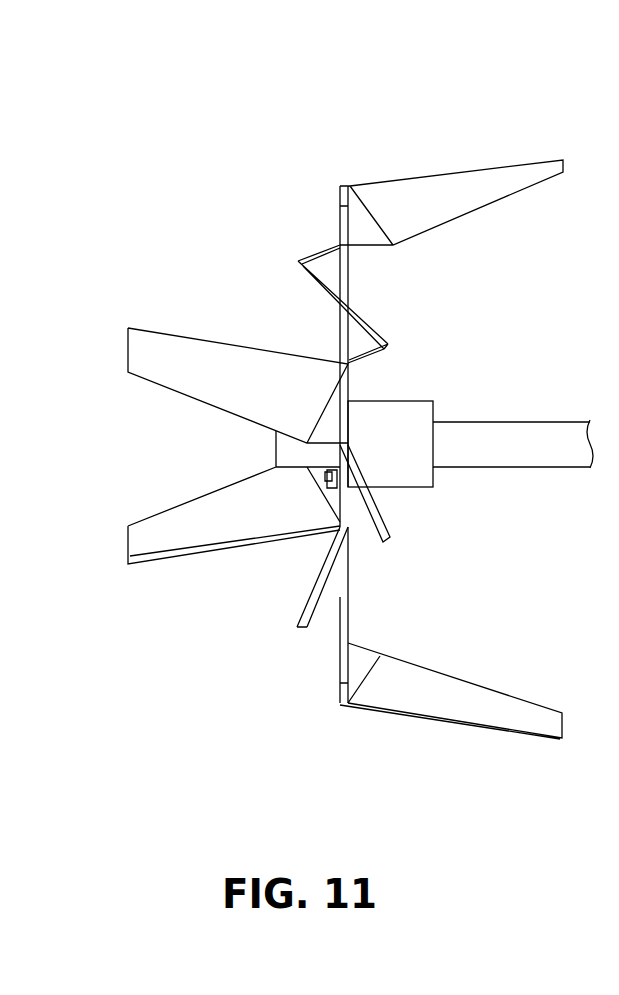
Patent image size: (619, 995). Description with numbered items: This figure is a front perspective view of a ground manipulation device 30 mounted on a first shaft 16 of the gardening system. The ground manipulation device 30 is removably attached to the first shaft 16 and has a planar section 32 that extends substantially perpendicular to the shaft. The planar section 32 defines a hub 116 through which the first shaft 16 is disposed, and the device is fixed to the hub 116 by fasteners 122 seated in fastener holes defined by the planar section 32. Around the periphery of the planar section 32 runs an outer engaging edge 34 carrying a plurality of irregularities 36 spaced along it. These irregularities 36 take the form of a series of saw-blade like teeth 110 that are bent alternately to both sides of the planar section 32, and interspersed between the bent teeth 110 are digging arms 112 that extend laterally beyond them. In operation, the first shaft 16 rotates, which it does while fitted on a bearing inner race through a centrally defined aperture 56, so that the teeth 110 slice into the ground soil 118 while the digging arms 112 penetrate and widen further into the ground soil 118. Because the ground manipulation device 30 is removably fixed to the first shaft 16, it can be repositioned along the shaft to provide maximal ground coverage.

The first shaft 16 is at (533, 438).
The ground manipulation device 30 is at (507, 165).
The planar section 32 is at (350, 622).
The outer engaging edge 34 is at (298, 263).
The irregularities 36 is at (188, 352).
The centrally defined aperture 56 is at (352, 330).
The teeth 110 is at (322, 248).
The digging arms 112 is at (435, 190).
The hub 116 is at (400, 408).
The ground soil 118 is at (565, 646).
The fasteners 122 is at (327, 478).